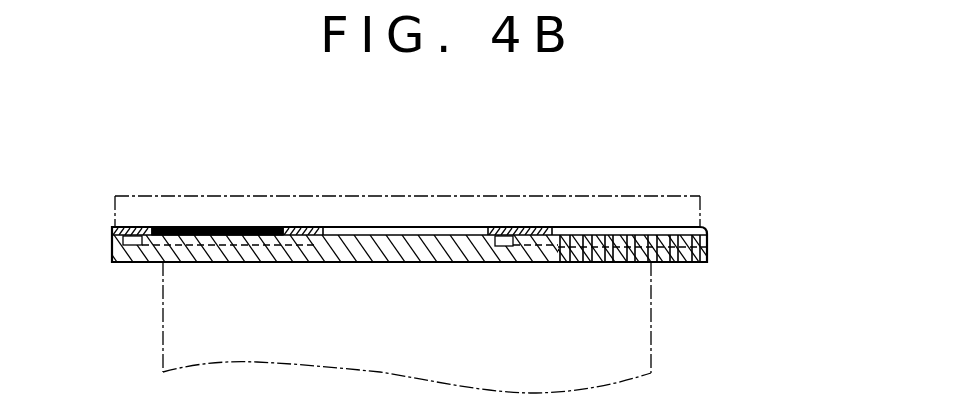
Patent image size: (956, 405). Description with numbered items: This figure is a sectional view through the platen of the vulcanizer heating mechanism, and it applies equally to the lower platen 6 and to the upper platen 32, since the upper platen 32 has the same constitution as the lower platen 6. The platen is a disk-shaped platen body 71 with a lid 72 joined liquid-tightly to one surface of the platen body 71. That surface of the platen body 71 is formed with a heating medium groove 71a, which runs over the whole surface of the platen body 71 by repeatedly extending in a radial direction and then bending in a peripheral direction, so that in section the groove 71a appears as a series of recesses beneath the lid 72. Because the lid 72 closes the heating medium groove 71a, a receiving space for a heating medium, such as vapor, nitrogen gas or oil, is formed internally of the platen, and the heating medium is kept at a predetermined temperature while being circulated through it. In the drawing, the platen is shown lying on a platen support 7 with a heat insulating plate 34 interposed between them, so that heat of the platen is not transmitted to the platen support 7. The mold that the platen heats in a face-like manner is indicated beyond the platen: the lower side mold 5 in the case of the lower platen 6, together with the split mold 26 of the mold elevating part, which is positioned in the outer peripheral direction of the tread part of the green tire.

The upper platen 32 is at (484, 229).
The lower platen 6 is at (484, 229).
The platen body 71 is at (707, 256).
The lid 72 is at (707, 229).
The heating medium groove 71a is at (131, 246).
The heat insulating plate 34 is at (407, 181).
The platen support 7 is at (603, 202).
The split mold 26 is at (465, 327).
The lower side mold 5 is at (643, 345).